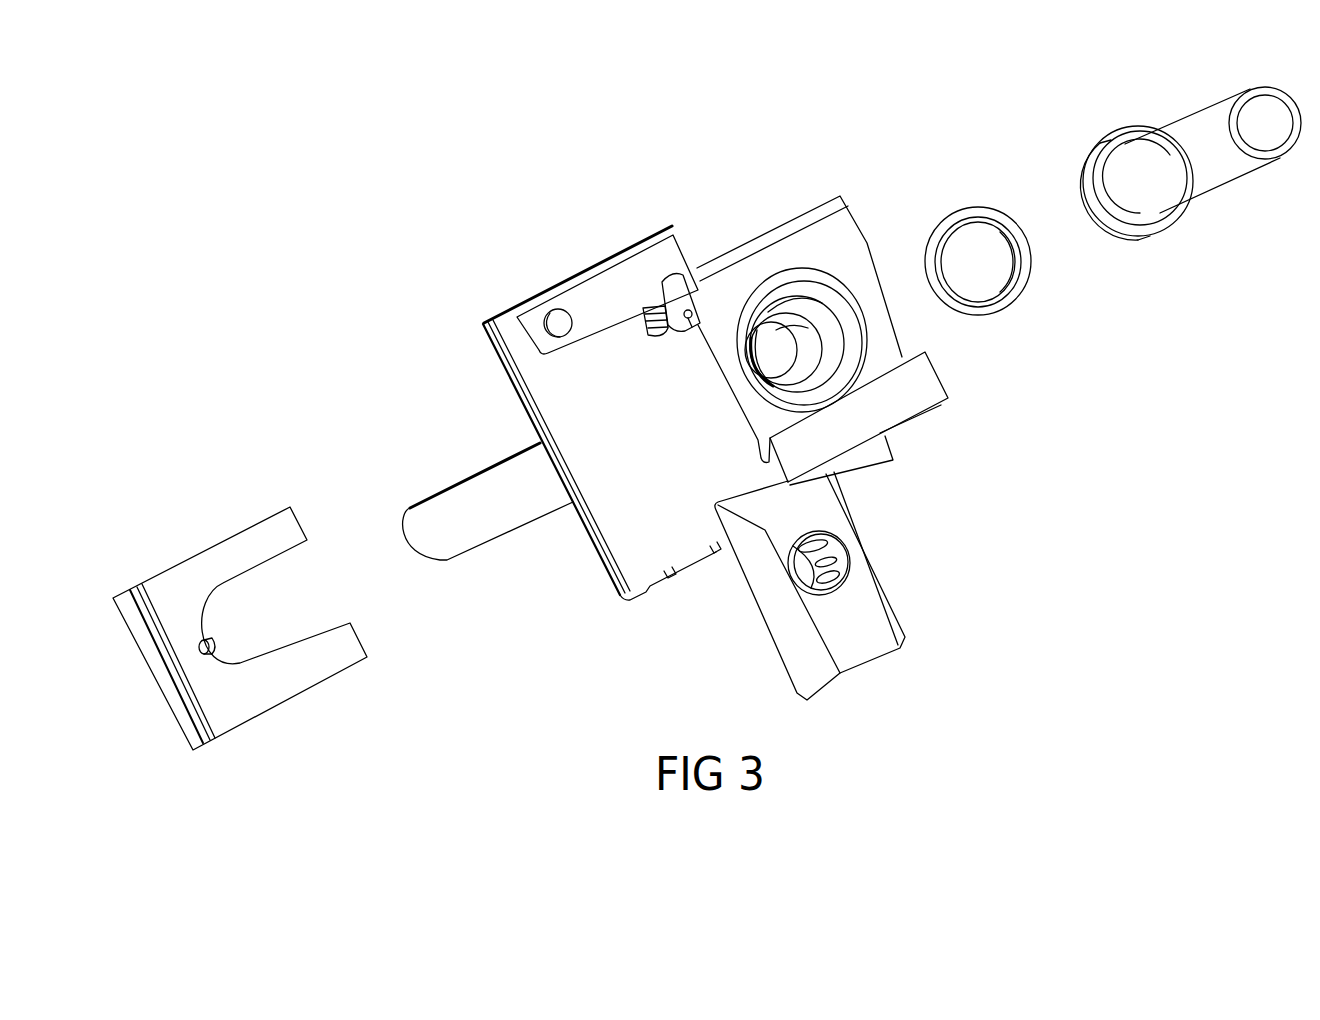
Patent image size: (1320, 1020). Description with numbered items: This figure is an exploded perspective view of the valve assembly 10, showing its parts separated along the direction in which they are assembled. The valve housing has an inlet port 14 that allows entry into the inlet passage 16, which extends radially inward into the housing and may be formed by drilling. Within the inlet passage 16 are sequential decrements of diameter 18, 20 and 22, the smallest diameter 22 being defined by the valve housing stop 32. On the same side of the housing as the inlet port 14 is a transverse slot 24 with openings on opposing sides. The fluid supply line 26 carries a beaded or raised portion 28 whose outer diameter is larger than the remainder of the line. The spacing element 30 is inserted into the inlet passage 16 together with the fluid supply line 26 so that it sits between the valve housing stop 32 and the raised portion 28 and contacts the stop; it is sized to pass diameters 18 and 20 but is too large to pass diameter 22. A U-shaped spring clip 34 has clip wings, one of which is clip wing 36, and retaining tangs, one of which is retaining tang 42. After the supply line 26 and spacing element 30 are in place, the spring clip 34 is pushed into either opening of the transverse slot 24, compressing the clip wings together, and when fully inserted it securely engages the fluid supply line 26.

The valve assembly 10 is at (398, 210).
The inlet port 14 is at (863, 335).
The inlet passage 16 is at (866, 349).
The diameter 18 is at (828, 280).
The diameter 20 is at (795, 328).
The diameter 22 is at (822, 348).
The transverse slot 24 is at (658, 293).
The fluid supply line 26 is at (1232, 183).
The raised portion 28 is at (1107, 142).
The spacing element 30 is at (1007, 310).
The valve housing stop 32 is at (857, 338).
The spring clip 34 is at (313, 687).
The clip wing 36 is at (173, 700).
The retaining tang 42 is at (212, 642).